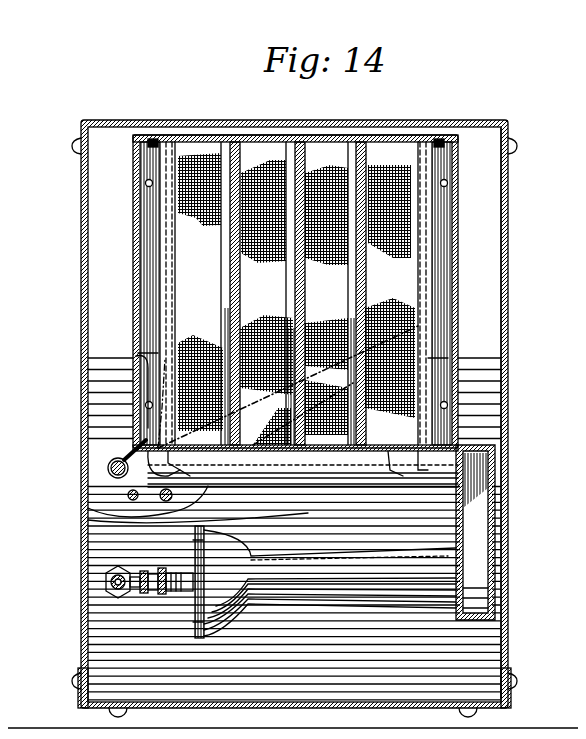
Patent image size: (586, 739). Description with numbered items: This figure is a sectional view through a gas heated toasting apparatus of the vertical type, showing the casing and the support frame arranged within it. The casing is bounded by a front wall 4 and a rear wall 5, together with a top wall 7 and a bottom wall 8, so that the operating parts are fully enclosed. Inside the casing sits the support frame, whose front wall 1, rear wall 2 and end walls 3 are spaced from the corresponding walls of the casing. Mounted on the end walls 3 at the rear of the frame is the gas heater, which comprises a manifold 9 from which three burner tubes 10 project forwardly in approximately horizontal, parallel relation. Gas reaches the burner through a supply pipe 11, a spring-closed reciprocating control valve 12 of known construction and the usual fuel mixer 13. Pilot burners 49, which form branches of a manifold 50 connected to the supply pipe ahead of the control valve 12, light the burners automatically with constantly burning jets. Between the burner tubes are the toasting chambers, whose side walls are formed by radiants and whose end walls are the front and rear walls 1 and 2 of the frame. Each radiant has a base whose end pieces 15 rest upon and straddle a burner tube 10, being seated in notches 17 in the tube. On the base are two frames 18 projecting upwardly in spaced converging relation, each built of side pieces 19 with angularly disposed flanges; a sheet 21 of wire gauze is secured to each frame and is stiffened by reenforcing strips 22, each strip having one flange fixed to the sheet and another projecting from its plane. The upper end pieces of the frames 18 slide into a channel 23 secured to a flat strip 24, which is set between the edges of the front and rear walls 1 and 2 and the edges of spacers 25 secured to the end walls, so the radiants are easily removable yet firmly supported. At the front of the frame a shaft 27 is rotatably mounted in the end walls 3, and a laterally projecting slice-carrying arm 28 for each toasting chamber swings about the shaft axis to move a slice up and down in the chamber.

The front wall 1 is at (165, 262).
The rear wall 2 is at (455, 262).
The end walls 3 is at (95, 638).
The front wall 4 is at (78, 400).
The rear wall 5 is at (495, 374).
The top wall 7 is at (146, 116).
The bottom wall 8 is at (204, 701).
The manifold 9 is at (490, 515).
The burner tubes 10 is at (380, 443).
The supply pipe 11 is at (110, 582).
The control valve 12 is at (98, 566).
The fuel mixer 13 is at (210, 550).
The end pieces 15 is at (283, 462).
The notches 17 is at (308, 460).
The frames 18 is at (196, 210).
The side pieces 19 is at (162, 306).
The sheet of wire gauze 21 is at (130, 352).
The reenforcing strips 22 is at (230, 302).
The channel 23 is at (148, 130).
The flat strip 24 is at (198, 127).
The spacers 25 is at (140, 348).
The shaft 27 is at (82, 500).
The slice-carrying arm 28 is at (82, 512).
The pilot burners 49 is at (76, 437).
The manifold 50 is at (100, 460).